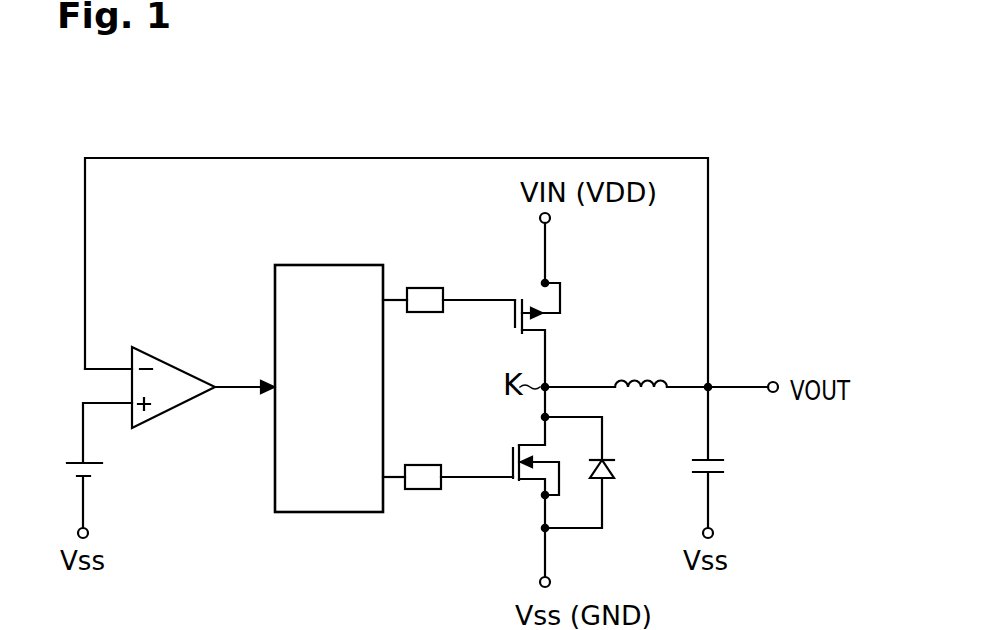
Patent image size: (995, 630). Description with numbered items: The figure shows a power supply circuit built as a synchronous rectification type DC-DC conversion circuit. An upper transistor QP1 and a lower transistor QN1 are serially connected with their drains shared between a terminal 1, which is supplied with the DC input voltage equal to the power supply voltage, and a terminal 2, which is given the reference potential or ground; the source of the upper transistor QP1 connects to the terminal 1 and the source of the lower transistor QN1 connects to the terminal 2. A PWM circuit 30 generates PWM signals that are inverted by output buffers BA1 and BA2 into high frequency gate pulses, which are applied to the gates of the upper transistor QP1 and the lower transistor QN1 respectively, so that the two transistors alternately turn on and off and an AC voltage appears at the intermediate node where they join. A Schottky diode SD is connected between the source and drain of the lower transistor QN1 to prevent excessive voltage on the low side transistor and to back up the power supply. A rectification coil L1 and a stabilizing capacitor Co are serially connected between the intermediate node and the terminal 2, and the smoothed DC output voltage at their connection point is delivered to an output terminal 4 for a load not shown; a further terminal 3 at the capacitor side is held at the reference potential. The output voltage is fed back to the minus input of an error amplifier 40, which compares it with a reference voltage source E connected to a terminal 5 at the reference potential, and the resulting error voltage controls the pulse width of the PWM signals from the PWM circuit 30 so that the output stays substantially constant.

The terminal 1 is at (551, 218).
The terminal 2 is at (551, 582).
The VSS terminal of output capacitor 3 is at (714, 533).
The output terminal 4 is at (772, 381).
The terminal 5 is at (89, 533).
The PWM circuit 30 is at (328, 264).
The error amplifier 40 is at (172, 362).
The output buffer BA1 is at (424, 288).
The output buffer BA2 is at (423, 490).
The upper transistor QP1 is at (529, 320).
The lower transistor QN1 is at (528, 497).
The Schottky diode SD is at (619, 470).
The rectification coil L1 is at (641, 363).
The stabilizing capacitor Co is at (723, 466).
The reference voltage source E is at (97, 489).